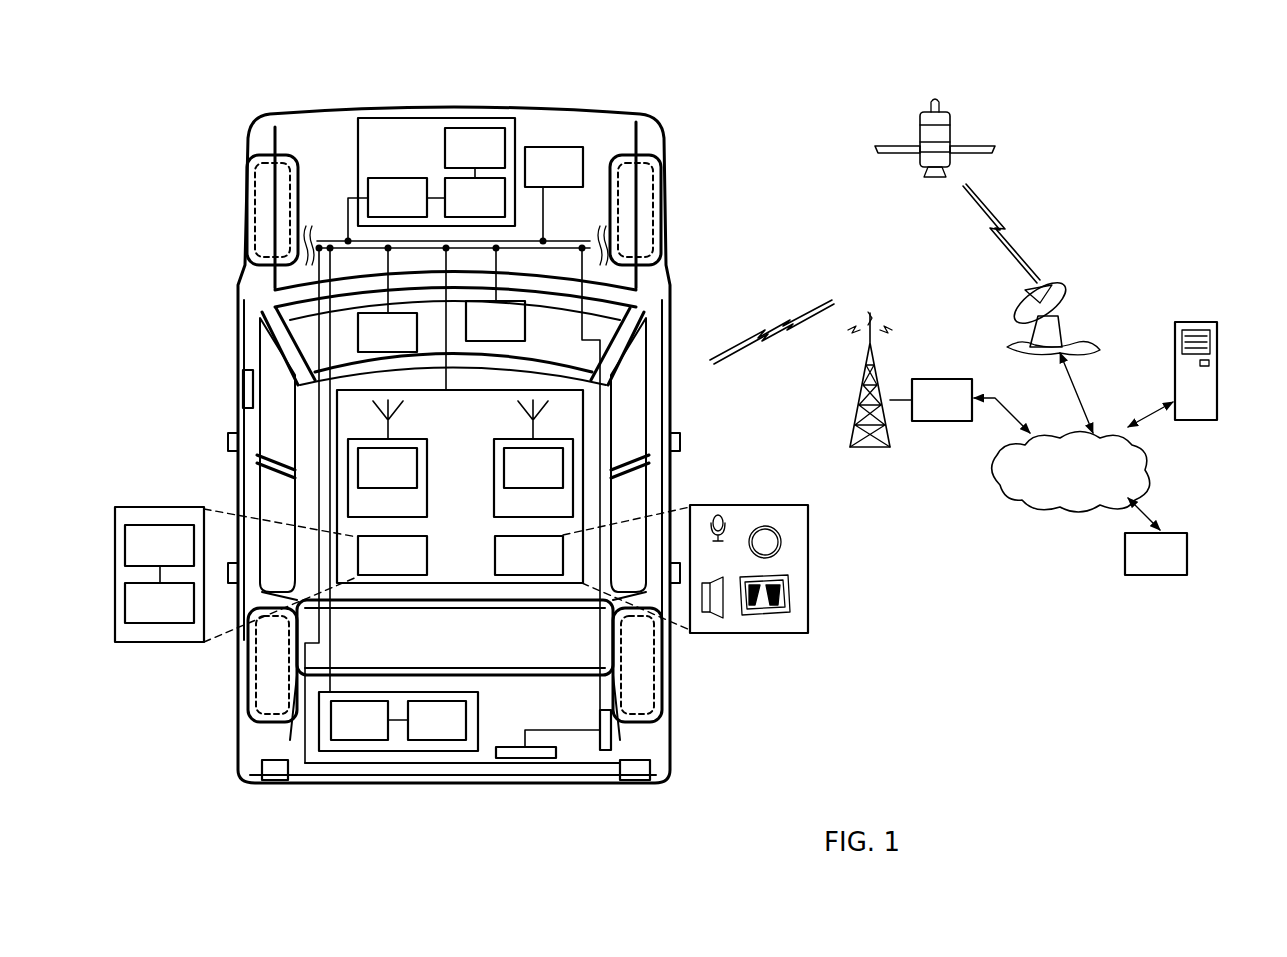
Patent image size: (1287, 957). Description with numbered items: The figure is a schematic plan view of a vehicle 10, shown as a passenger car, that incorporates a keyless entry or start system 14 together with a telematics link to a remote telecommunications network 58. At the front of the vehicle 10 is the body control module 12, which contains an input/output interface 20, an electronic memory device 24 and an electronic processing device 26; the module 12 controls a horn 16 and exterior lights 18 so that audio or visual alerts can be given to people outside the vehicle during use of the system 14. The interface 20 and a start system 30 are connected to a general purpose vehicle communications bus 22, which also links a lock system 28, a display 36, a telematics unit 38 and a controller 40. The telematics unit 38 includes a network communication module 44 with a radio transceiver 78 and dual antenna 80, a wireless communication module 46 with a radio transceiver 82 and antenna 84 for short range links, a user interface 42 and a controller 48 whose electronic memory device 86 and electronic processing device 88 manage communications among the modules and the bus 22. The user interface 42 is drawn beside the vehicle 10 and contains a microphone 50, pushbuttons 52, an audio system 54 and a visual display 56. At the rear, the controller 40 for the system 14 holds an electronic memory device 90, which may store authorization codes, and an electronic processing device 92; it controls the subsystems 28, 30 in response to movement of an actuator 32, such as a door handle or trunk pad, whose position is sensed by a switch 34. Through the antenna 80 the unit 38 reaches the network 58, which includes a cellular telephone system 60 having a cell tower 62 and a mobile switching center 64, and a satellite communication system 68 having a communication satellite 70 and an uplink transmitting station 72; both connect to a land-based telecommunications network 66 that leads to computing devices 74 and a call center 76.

The vehicle 10 is at (277, 112).
The body control module 12 is at (431, 179).
The keyless entry or start system 14 is at (312, 475).
The horn 16 is at (708, 460).
The exterior lights 18 is at (281, 772).
The input/output interface 20 is at (396, 209).
The vehicle communications bus 22 is at (563, 242).
The electronic memory device 24 is at (475, 148).
The electronic processing device 26 is at (475, 192).
The lock system 28 is at (243, 387).
The start system 30 is at (554, 194).
The actuator 32 is at (518, 752).
The switch 34 is at (612, 730).
The display 36 is at (495, 294).
The telematics unit 38 is at (460, 415).
The controller 40 is at (390, 755).
The user interface 42 is at (529, 555).
The network communication module 44 is at (533, 478).
The wireless communication module 46 is at (387, 478).
The controller 48 is at (392, 555).
The microphone 50 is at (730, 527).
The pushbuttons 52 is at (790, 525).
The audio system 54 is at (728, 623).
The visual display 56 is at (798, 593).
The telecommunications network 58 is at (1107, 207).
The cellular telephone system 60 is at (908, 440).
The cell tower 62 is at (880, 380).
The mobile switching center 64 is at (960, 406).
The land-based telecommunications network 66 is at (1071, 432).
The satellite communication system 68 is at (940, 213).
The communication satellite 70 is at (957, 138).
The uplink transmitting station 72 is at (1067, 310).
The computing devices 74 is at (1170, 357).
The call center 76 is at (1156, 536).
The radio transceiver 78 is at (533, 468).
The dual antenna 80 is at (522, 413).
The radio transceiver 82 is at (387, 468).
The antenna 84 is at (411, 402).
The electronic memory device 86 is at (236, 574).
The electronic processing device 88 is at (159, 545).
The electronic memory device 90 is at (427, 720).
The electronic processing device 92 is at (359, 720).